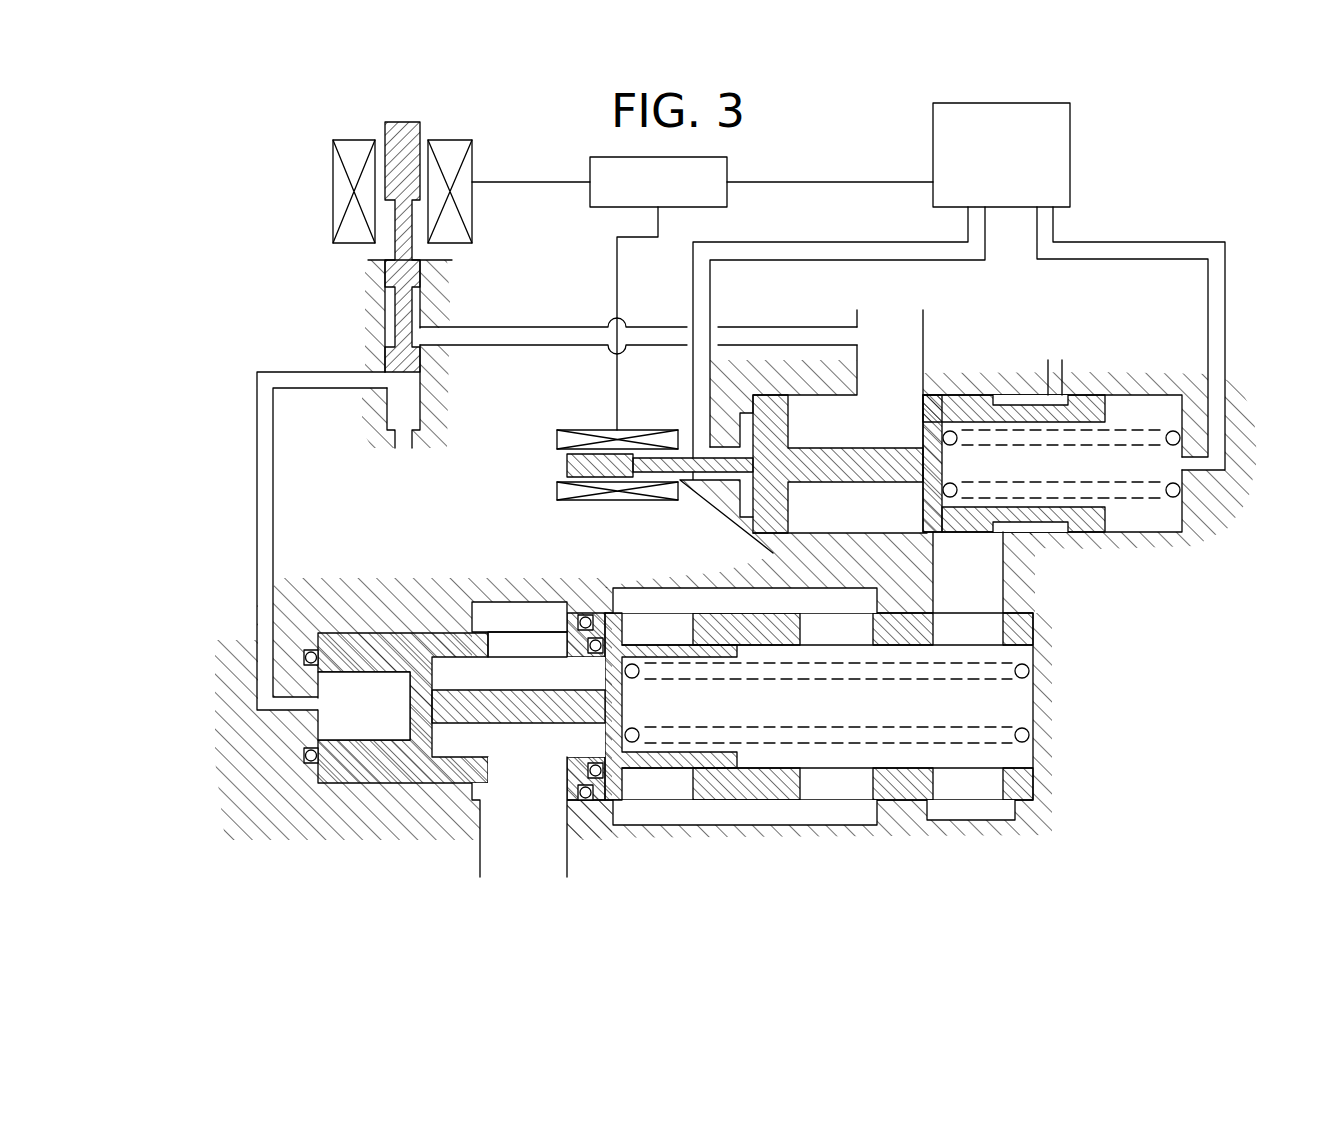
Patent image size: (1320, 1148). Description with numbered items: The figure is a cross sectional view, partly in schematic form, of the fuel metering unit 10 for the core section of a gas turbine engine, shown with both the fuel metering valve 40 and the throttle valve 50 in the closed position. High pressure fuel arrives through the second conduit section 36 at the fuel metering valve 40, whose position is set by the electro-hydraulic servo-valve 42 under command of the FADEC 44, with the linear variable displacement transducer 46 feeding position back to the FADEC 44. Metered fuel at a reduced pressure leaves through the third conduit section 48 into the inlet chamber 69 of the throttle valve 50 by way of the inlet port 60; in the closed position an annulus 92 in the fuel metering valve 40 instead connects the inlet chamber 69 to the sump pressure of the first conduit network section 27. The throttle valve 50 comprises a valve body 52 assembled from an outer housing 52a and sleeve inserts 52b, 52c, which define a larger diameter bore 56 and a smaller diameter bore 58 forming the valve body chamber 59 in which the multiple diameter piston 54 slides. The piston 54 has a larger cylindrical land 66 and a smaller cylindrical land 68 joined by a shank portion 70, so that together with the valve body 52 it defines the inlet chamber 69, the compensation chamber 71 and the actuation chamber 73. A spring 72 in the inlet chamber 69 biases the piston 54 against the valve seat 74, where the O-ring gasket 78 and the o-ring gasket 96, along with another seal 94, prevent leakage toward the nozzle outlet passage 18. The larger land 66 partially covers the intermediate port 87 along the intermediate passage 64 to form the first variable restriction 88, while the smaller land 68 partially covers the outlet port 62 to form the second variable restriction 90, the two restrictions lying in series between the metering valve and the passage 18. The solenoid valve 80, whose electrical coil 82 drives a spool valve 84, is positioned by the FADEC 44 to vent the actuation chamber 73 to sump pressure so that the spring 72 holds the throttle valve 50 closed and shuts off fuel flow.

The fuel metering unit 10 is at (205, 198).
The solenoid valve 80 is at (337, 188).
The electrical coil 82 is at (470, 215).
The spool valve 84 is at (385, 268).
The first conduit network section 27 is at (407, 441).
The electro-hydraulic servo-valve 42 is at (980, 110).
The full authority digital electronic controller 44 is at (718, 198).
The second conduit section 36 is at (893, 320).
The linear variable displacement transducer 46 is at (578, 430).
The annulus 92 is at (997, 388).
The valve seat 74 is at (640, 642).
The larger cylindrical land 66 is at (657, 655).
The compensation chamber 71 is at (543, 647).
The shank portion 70 is at (523, 672).
The smaller cylindrical land 68 is at (382, 665).
The multiple diameter piston 54 is at (455, 665).
The actuation chamber 73 is at (335, 727).
The o-ring gasket 96 is at (310, 757).
The smaller valve body sleeve 52c is at (372, 787).
The smaller diameter bore 58 is at (438, 787).
The second variable restriction 90 is at (515, 760).
The outlet port 62 is at (540, 773).
The seal 94 is at (608, 805).
The nozzle outlet passage 18 is at (560, 855).
The O-ring gasket 78 is at (607, 772).
The intermediate passage 64 is at (697, 810).
The larger diameter bore 56 is at (740, 790).
The larger valve body sleeve 52b is at (730, 800).
The intermediate port 87 is at (820, 790).
The first variable restriction 88 is at (855, 765).
The valve body 52 is at (913, 833).
The inlet chamber 69 is at (937, 698).
The outer housing 52a is at (1043, 803).
The throttle valve 50 is at (997, 712).
The valve body chamber 59 is at (975, 690).
The spring 72 is at (1032, 666).
The inlet port 60 is at (1000, 633).
The third conduit section 48 is at (997, 597).
The fuel metering valve 40 is at (1087, 537).